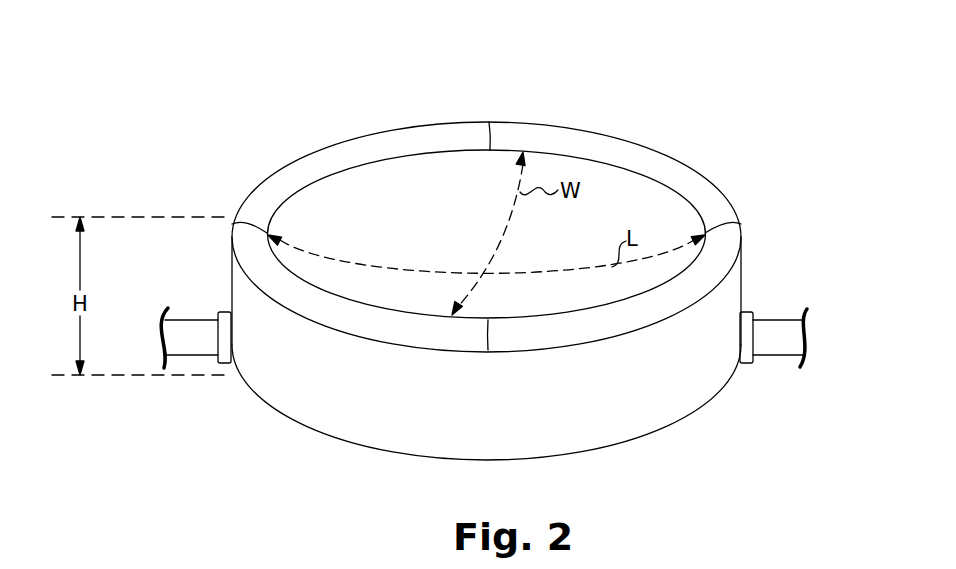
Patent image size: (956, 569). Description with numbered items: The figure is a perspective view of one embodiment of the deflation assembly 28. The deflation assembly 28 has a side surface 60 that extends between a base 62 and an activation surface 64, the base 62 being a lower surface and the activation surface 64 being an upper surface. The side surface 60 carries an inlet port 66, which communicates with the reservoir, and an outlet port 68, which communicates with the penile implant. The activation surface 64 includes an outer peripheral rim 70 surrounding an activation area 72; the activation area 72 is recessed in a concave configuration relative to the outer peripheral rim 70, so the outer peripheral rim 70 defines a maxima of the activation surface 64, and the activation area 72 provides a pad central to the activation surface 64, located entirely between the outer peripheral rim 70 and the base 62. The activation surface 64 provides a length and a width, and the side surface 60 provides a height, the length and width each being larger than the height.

The deflation assembly 28 is at (205, 84).
The side surface 60 is at (307, 407).
The base 62 is at (422, 458).
The activation surface 64 is at (603, 162).
The inlet port 66 is at (780, 348).
The outlet port 68 is at (192, 328).
The outer peripheral rim 70 is at (403, 143).
The activation area 72 is at (328, 192).